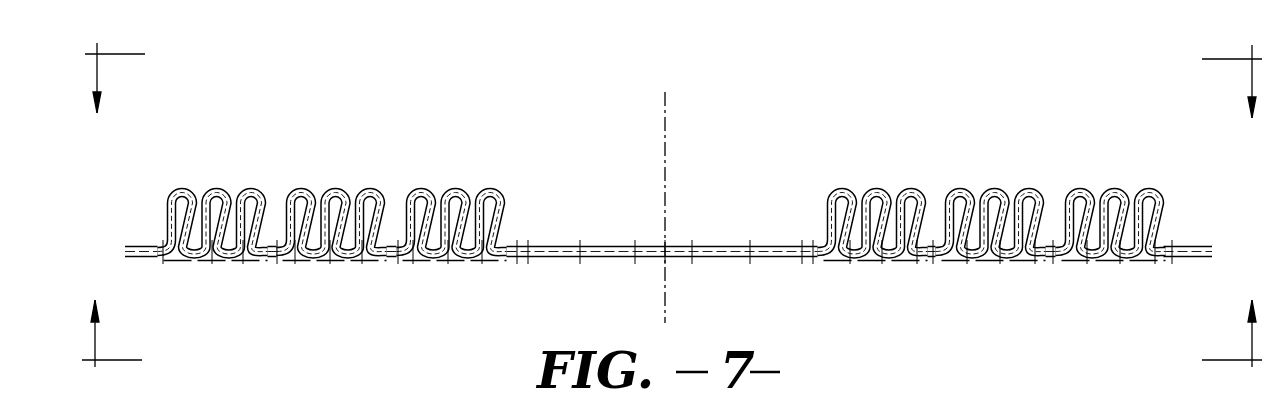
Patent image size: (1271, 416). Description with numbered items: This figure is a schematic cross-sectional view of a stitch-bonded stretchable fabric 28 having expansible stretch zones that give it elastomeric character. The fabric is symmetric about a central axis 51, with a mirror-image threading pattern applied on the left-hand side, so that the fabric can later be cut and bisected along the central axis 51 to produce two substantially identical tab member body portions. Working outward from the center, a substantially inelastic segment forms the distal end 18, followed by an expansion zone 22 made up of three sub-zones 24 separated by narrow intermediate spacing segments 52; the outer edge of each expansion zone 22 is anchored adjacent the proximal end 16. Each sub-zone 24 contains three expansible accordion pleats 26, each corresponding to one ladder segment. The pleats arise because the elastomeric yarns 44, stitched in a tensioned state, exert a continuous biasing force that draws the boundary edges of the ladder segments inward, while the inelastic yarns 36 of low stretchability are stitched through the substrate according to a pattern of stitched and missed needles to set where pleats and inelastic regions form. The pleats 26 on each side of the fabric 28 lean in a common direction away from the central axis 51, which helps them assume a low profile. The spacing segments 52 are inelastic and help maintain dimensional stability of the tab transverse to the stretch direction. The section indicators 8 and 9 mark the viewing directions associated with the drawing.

The section view indicator 8 is at (673, 98).
The section view indicator 9 is at (672, 316).
The proximal end 16 is at (148, 243).
The distal end 18 is at (662, 203).
The expansion zone 22 is at (663, 151).
The sub-zones 24 is at (663, 179).
The expansible accordion pleats 26 is at (265, 190).
The stretchable fabric 28 is at (733, 126).
The inelastic yarns 36 is at (246, 259).
The elastomeric yarns 44 is at (197, 259).
The central axis 51 is at (662, 120).
The intermediate spacing segments 52 is at (293, 259).